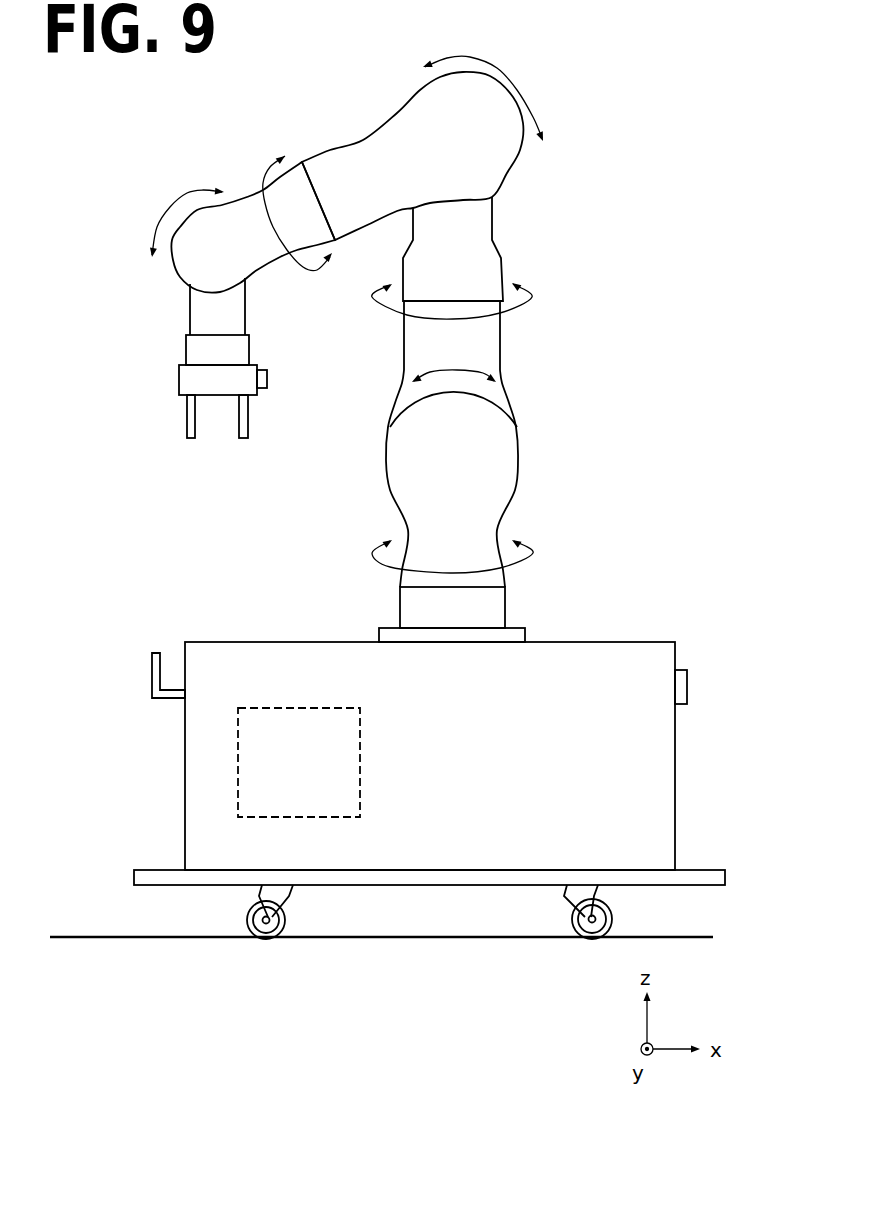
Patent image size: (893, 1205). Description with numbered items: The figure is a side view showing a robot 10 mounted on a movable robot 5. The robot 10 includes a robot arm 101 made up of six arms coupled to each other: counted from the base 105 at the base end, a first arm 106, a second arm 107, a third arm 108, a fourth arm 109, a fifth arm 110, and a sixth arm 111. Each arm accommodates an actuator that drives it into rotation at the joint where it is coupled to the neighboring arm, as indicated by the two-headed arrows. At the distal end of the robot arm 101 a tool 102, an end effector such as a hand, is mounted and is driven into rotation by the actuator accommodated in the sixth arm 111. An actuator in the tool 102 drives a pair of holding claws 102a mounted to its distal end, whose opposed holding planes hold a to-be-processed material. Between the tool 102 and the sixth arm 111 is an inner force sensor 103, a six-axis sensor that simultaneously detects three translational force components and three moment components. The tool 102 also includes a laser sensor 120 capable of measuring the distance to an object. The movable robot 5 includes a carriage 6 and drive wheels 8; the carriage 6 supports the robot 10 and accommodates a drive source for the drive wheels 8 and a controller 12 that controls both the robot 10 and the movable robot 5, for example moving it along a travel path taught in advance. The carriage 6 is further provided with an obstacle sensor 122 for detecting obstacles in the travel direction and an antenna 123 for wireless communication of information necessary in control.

The robot 10 is at (345, 54).
The robot arm 101 is at (511, 342).
The fourth arm 109 is at (360, 150).
The fifth arm 110 is at (247, 201).
The third arm 108 is at (492, 219).
The second arm 107 is at (418, 350).
The first arm 106 is at (507, 468).
The base 105 is at (404, 608).
The sixth arm 111 is at (196, 310).
The inner force sensor 103 is at (197, 349).
The tool 102 is at (181, 386).
The holding claws 102a is at (247, 440).
The laser sensor 120 is at (268, 381).
The movable robot 5 is at (654, 600).
The carriage 6 is at (219, 640).
The antenna 123 is at (150, 673).
The obstacle sensor 122 is at (690, 690).
The controller 12 is at (362, 752).
The drive wheels 8 is at (246, 921).